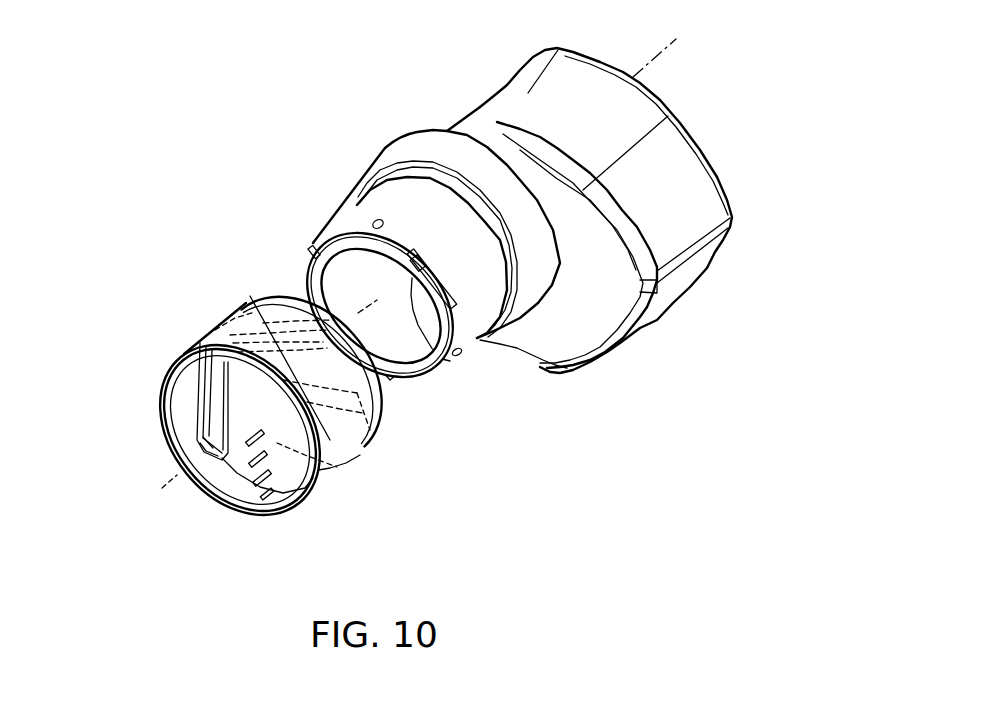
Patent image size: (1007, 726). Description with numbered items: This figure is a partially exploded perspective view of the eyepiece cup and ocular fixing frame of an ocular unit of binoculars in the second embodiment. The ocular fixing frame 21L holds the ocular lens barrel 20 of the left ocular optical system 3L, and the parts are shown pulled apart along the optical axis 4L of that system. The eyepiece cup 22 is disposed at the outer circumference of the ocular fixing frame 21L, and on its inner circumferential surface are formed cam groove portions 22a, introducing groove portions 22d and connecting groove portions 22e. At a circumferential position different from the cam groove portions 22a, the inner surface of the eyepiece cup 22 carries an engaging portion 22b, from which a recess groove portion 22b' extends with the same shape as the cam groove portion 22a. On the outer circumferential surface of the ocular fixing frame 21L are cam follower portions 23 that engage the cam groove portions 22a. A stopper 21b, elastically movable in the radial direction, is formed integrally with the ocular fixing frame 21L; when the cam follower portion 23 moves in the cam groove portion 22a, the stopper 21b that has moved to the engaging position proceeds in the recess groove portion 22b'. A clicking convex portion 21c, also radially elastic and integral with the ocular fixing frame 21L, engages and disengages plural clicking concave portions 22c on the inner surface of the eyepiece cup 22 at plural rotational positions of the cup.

The ocular lens barrel 20 is at (430, 375).
The ocular fixing frame 21L is at (402, 203).
The stopper 21b is at (440, 372).
The clicking convex portion 21c is at (393, 380).
The eyepiece cup 22 is at (333, 442).
The cam groove portion 22a is at (228, 455).
The engaging portion 22b is at (323, 464).
The recess groove portion 22b' is at (231, 226).
The clicking concave portion 22c is at (265, 482).
The introducing groove portion 22d is at (207, 453).
The connecting groove portion 22e is at (210, 438).
The cam follower portion 23 is at (375, 220).
The left ocular optical system 3L is at (343, 280).
The optical axis of left ocular optical system 4L is at (183, 467).